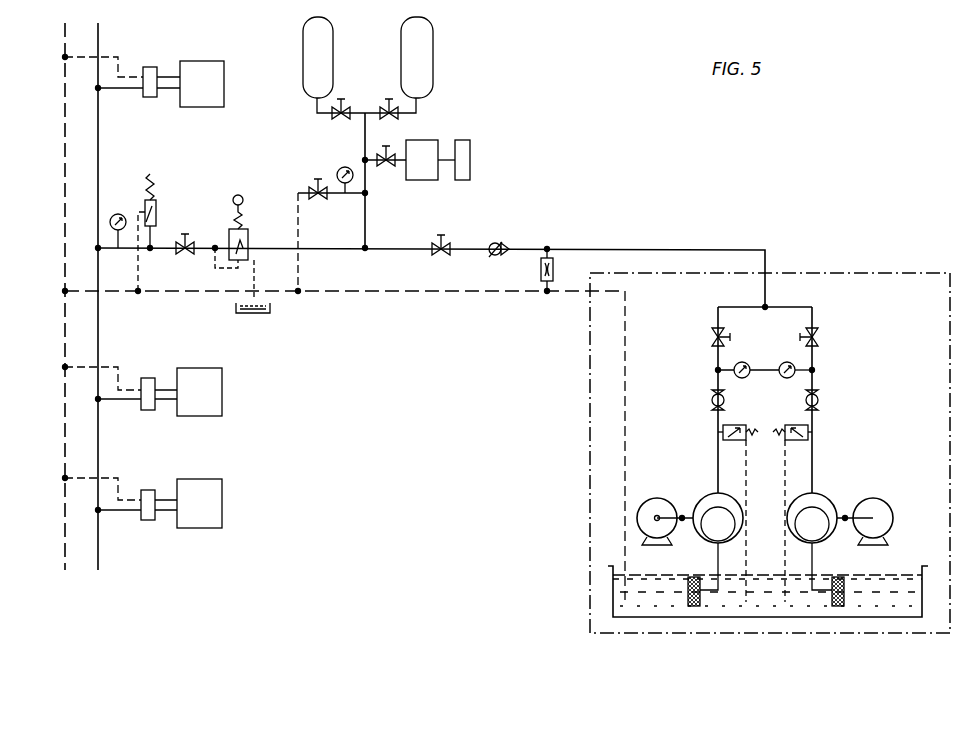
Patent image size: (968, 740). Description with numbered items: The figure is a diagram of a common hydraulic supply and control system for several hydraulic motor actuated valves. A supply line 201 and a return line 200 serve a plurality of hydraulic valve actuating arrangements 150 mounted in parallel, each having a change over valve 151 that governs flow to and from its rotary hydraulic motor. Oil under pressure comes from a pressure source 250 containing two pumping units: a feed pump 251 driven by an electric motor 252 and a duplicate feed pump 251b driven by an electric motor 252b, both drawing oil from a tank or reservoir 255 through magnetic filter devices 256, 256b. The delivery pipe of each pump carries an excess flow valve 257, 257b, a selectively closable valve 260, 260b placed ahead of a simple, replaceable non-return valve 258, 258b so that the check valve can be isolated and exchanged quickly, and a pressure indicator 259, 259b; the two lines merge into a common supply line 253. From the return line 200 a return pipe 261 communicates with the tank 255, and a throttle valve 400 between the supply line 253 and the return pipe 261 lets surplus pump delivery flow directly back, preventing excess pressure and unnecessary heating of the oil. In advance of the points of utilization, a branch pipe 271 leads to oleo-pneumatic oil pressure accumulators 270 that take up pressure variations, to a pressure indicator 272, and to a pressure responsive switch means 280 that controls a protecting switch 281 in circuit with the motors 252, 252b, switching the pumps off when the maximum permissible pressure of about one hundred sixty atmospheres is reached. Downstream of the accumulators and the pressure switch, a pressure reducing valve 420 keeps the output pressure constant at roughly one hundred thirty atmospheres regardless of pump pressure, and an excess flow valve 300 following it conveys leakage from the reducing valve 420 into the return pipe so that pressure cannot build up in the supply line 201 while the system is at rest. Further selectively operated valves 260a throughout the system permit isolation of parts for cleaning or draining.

The return line 200 is at (63, 156).
The supply line 201 is at (100, 165).
The hydraulic valve actuating arrangement 150 is at (208, 107).
The change over valve 151 is at (151, 67).
The excess flow valve 300 is at (157, 214).
The pressure reducing valve 420 is at (248, 233).
The oil pressure accumulator 270 is at (400, 45).
The pressure indicator 272 is at (341, 166).
The branch pipe 271 is at (368, 228).
The pressure responsive switch means 280 is at (425, 145).
The protecting switch 281 is at (472, 155).
The non-return valve 258 is at (503, 243).
The non-return valve 258b is at (820, 400).
The selectively operated valve 260a is at (438, 255).
The selectively closable valve 260 is at (712, 337).
The selectively closable valve 260b is at (821, 337).
The throttle valve 400 is at (540, 268).
The common supply line 253 is at (663, 250).
The pressure source 250 is at (853, 272).
The pressure indicator 259 is at (742, 362).
The pressure indicator 259b is at (787, 379).
The excess flow valve 257 is at (723, 432).
The excess flow valve 257b is at (808, 432).
The return pipe 261 is at (623, 405).
The electric motor 252 is at (652, 498).
The feed pump 251 is at (703, 497).
The feed pump 251b is at (822, 497).
The electric motor 252b is at (882, 500).
The tank or reservoir 255 is at (634, 618).
The magnetic filter device 256 is at (695, 608).
The magnetic filter device 256b is at (840, 608).